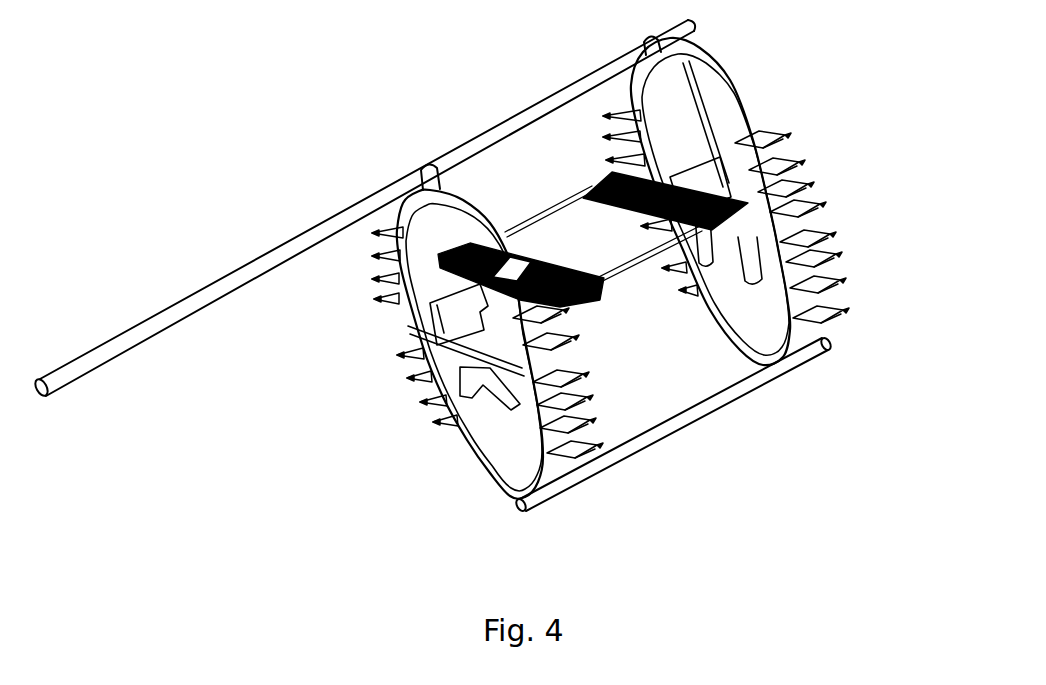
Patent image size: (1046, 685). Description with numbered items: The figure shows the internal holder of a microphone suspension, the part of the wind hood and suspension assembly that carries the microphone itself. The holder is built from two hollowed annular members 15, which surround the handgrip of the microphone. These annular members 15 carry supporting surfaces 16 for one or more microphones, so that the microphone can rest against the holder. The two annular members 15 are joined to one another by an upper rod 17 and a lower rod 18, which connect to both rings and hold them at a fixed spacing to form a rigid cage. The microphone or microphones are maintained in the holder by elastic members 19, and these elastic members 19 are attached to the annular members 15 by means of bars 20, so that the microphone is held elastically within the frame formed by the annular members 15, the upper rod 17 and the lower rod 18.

The annular member 15 is at (457, 193).
The supporting surface 16 is at (718, 140).
The upper rod 17 is at (538, 108).
The lower rod 18 is at (700, 410).
The elastic member 19 is at (607, 180).
The bar 20 is at (525, 222).